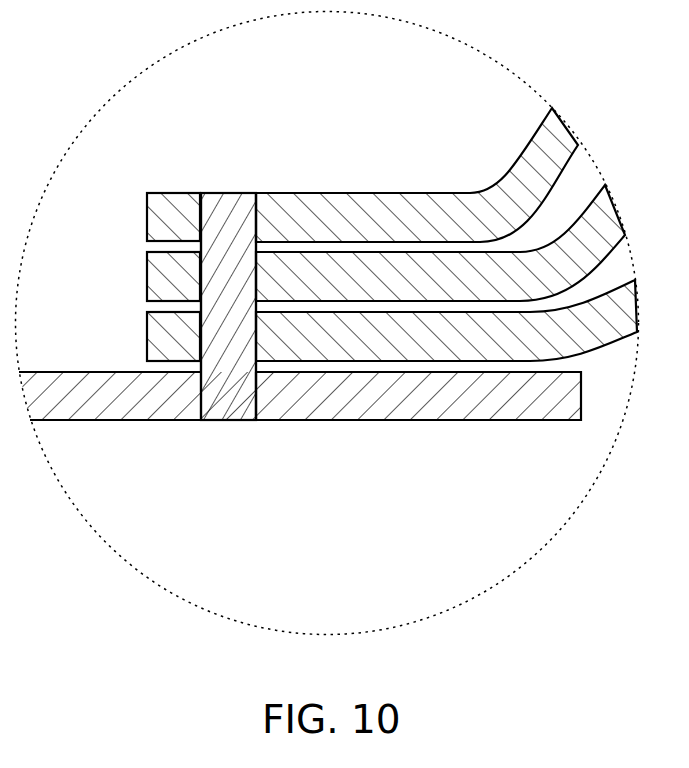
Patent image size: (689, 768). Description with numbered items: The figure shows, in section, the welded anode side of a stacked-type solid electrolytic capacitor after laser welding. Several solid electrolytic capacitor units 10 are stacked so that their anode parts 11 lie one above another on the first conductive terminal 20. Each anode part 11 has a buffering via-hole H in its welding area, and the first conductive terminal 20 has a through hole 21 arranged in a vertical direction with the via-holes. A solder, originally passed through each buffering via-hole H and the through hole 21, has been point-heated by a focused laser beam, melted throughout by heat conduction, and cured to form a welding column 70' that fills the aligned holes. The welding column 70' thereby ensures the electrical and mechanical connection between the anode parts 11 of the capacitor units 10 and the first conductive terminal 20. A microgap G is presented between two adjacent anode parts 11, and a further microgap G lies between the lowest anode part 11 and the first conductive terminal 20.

The solid electrolytic capacitor unit 10 is at (341, 237).
The anode part 11 is at (168, 212).
The microgap G is at (163, 248).
The buffering via-hole H is at (256, 222).
The welding column 70' is at (228, 266).
The first conductive terminal 20 is at (392, 436).
The through hole 21 is at (256, 393).